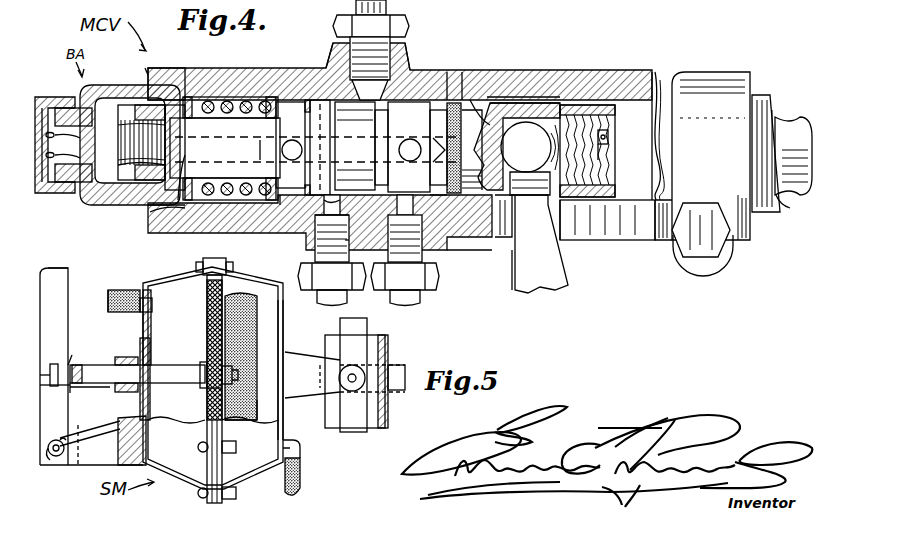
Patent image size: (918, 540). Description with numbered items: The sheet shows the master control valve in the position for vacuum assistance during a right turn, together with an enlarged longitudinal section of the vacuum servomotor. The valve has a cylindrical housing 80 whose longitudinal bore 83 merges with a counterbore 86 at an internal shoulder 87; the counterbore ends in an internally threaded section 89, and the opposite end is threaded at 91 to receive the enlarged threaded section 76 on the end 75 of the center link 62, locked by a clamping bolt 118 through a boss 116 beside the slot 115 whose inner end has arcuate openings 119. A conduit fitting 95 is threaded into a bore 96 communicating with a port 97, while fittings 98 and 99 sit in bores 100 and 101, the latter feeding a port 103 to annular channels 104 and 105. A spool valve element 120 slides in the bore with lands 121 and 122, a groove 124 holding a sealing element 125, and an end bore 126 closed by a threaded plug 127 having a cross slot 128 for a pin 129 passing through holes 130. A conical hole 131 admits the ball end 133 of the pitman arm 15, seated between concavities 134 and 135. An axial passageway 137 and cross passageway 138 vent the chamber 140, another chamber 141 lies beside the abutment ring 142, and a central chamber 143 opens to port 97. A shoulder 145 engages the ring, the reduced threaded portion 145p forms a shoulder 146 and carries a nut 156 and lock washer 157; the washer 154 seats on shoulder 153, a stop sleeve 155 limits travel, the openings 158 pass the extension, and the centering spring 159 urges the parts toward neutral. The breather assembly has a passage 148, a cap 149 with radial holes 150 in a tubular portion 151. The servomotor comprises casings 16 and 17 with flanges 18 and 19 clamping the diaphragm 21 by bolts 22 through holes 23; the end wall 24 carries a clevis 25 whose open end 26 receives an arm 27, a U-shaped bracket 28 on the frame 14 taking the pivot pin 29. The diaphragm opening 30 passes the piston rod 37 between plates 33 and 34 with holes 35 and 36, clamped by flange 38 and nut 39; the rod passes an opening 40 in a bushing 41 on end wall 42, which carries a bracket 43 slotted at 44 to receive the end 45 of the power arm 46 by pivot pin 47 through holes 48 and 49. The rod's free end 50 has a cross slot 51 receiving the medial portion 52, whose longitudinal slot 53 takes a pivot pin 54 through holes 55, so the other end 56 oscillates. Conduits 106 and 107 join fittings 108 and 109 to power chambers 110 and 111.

In FIG. 5, the frame 14 is at (348, 430).
In FIG. 4, the pitman arm 15 is at (512, 270).
In FIG. 5, the cup-shaped casing 16 is at (142, 284).
In FIG. 5, the cup-shaped casing 17 is at (279, 328).
In FIG. 5, the annular outturned flange 18 is at (198, 268).
In FIG. 5, the annular outturned flange 19 is at (218, 260).
In FIG. 5, the flexible power diaphragm 21 is at (205, 258).
In FIG. 5, the bolts 22 is at (236, 450).
In FIG. 5, the registering holes 23 is at (210, 280).
In FIG. 5, the end wall 24 is at (285, 330).
In FIG. 5, the clevis 25 is at (310, 396).
In FIG. 5, the open end 26 is at (318, 400).
In FIG. 5, the arm 27 is at (367, 326).
In FIG. 5, the U-shaped bracket 28 is at (383, 428).
In FIG. 5, the pivot pin 29 is at (365, 370).
In FIG. 5, the central opening 30 is at (212, 390).
In FIG. 5, the clamping plate 33 is at (207, 322).
In FIG. 5, the clamping plate 34 is at (235, 322).
In FIG. 5, the central hole 35 is at (200, 368).
In FIG. 5, the central hole 36 is at (238, 375).
In FIG. 5, the piston rod 37 is at (90, 365).
In FIG. 5, the annular flange 38 is at (205, 385).
In FIG. 5, the nut 39 is at (240, 400).
In FIG. 5, the opening 40 is at (140, 392).
In FIG. 5, the bushing 41 is at (122, 357).
In FIG. 5, the end wall 42 is at (140, 410).
In FIG. 5, the bracket 43 is at (95, 458).
In FIG. 5, the slot 44 is at (58, 460).
In FIG. 5, the end of power arm 45 is at (44, 392).
In FIG. 5, the power arm 46 is at (59, 258).
In FIG. 5, the pivot pin 47 is at (48, 446).
In FIG. 5, the hole 48 is at (62, 440).
In FIG. 5, the hole 49 is at (48, 448).
In FIG. 5, the free end of piston rod 50 is at (76, 365).
In FIG. 5, the cross slot 51 is at (68, 365).
In FIG. 5, the medial portion 52 is at (88, 388).
In FIG. 5, the longitudinal slot 53 is at (52, 372).
In FIG. 5, the pivot pin 54 is at (50, 370).
In FIG. 5, the registering holes 55 is at (70, 388).
In FIG. 5, the other end of power arm 56 is at (45, 280).
In FIG. 4, the center link 62 is at (790, 125).
In FIG. 4, the opposite end of center link 75 is at (776, 200).
In FIG. 4, the enlarged threaded section 76 is at (760, 96).
In FIG. 4, the cylindrical housing 80 is at (710, 72).
In FIG. 4, the longitudinal bore 83 is at (342, 100).
In FIG. 4, the counterbore 86 is at (244, 96).
In FIG. 4, the annular internal shoulder 87 is at (330, 68).
In FIG. 4, the internally threaded section 89 is at (150, 78).
In FIG. 4, the internal threads 91 is at (657, 55).
In FIG. 4, the conduit fitting 95 is at (400, 10).
In FIG. 4, the bore 96 is at (390, 47).
In FIG. 4, the port 97 is at (405, 65).
In FIG. 4, the conduit fitting 98 is at (349, 282).
In FIG. 4, the conduit fitting 99 is at (425, 282).
In FIG. 4, the bore 100 is at (349, 240).
In FIG. 4, the bore 101 is at (432, 250).
In FIG. 4, the port 103 is at (360, 210).
In FIG. 4, the annular channel 104 is at (336, 198).
In FIG. 4, the annular channel 105 is at (455, 100).
In FIG. 5, the flexible conduit 106 is at (120, 294).
In FIG. 5, the flexible conduit 107 is at (300, 480).
In FIG. 5, the fitting 108 is at (150, 318).
In FIG. 5, the fitting 109 is at (300, 455).
In FIG. 5, the power chamber 110 is at (185, 352).
In FIG. 5, the power chamber 111 is at (278, 415).
In FIG. 4, the longitudinal slot 115 is at (625, 238).
In FIG. 4, the lateral boss 116 is at (705, 270).
In FIG. 4, the clamping bolt 118 is at (730, 248).
In FIG. 4, the arcuate openings 119 is at (580, 238).
In FIG. 4, the spool-type valve element 120 is at (233, 153).
In FIG. 4, the annular land 121 is at (328, 150).
In FIG. 4, the annular land 122 is at (385, 125).
In FIG. 4, the exterior groove 124 is at (485, 110).
In FIG. 4, the annular sealing element 125 is at (470, 100).
In FIG. 4, the end bore 126 is at (545, 118).
In FIG. 4, the threaded plug 127 is at (605, 123).
In FIG. 4, the cross end slot 128 is at (610, 140).
In FIG. 4, the pin 129 is at (603, 160).
In FIG. 4, the registering holes 130 is at (606, 142).
In FIG. 4, the conical hole 131 is at (508, 236).
In FIG. 4, the ball end 133 is at (536, 144).
In FIG. 4, the concavity 134 is at (537, 147).
In FIG. 4, the concavity 135 is at (540, 244).
In FIG. 4, the axial passageway 137 is at (462, 108).
In FIG. 4, the cross passageway 138 is at (295, 140).
In FIG. 4, the annular chamber 140 is at (420, 195).
In FIG. 4, the annular chamber 141 is at (295, 194).
In FIG. 4, the abutment ring 142 is at (290, 100).
In FIG. 4, the central annular chamber 143 is at (352, 142).
In FIG. 4, the external annular shoulder 145 is at (276, 146).
In FIG. 4, the reduced threaded portion 145p is at (150, 205).
In FIG. 4, the annular shoulder 146 is at (165, 110).
In FIG. 4, the passage 148 is at (125, 168).
In FIG. 4, the breather cap 149 is at (66, 105).
In FIG. 4, the radial holes 150 is at (125, 140).
In FIG. 4, the tubular portion 151 is at (125, 118).
In FIG. 4, the annular shoulder 153 is at (190, 96).
In FIG. 4, the abutment washer 154 is at (175, 208).
In FIG. 4, the stop sleeve 155 is at (222, 100).
In FIG. 4, the nut 156 is at (136, 108).
In FIG. 4, the lock washer 157 is at (160, 95).
In FIG. 4, the central opening 158 is at (320, 90).
In FIG. 4, the centering spring 159 is at (272, 96).